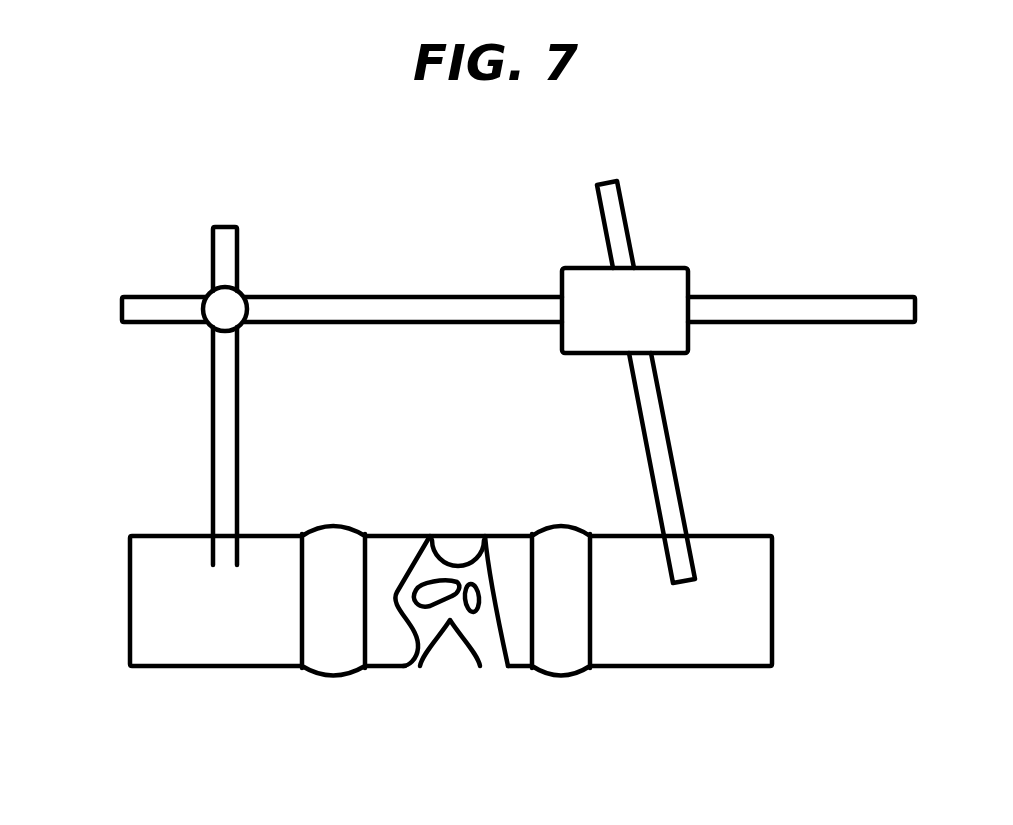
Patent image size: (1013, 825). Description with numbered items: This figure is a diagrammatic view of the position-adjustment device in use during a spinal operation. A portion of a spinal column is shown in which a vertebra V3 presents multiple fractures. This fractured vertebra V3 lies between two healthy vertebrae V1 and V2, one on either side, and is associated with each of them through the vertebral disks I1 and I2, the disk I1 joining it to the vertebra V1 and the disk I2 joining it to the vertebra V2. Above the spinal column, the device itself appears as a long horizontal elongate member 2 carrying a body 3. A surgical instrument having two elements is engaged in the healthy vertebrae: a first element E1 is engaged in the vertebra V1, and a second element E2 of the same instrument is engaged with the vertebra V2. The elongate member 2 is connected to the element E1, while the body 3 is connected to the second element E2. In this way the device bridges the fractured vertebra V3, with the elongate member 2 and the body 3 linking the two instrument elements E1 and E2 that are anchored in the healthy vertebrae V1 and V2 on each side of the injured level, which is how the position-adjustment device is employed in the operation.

The elongate member 2 is at (887, 298).
The body 3 is at (672, 268).
The element of a surgical instrument E1 is at (237, 438).
The second element of the surgical instrument E2 is at (672, 450).
The healthy vertebra V1 is at (150, 608).
The healthy vertebra V2 is at (748, 585).
The vertebra V3 is at (443, 667).
The vertebral disk I1 is at (320, 676).
The vertebral disk I2 is at (555, 676).